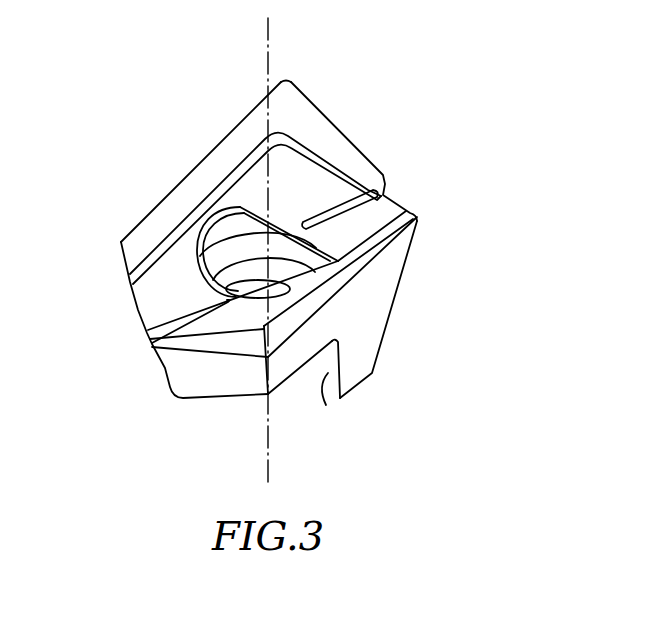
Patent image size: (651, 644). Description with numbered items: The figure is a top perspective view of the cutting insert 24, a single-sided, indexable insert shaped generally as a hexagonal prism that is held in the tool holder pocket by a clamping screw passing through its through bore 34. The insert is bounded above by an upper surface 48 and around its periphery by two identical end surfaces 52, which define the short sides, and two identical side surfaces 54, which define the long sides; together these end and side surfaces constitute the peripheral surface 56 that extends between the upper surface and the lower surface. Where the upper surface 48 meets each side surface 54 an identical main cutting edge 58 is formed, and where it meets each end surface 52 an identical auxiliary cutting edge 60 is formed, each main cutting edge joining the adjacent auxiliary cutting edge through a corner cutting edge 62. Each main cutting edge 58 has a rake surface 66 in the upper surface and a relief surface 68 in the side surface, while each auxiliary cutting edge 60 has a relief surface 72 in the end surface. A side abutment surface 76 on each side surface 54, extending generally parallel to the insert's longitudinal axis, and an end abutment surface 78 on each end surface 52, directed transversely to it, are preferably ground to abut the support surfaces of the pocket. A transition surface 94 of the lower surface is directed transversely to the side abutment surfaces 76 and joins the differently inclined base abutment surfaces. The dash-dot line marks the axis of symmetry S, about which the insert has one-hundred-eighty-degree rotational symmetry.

The cutting insert 24 is at (289, 247).
The through bore 34 is at (210, 266).
The upper surface 48 is at (168, 218).
The end surface 52 is at (375, 143).
The side surface 54 is at (356, 344).
The peripheral surface 56 is at (287, 368).
The main cutting edge 58 is at (235, 127).
The auxiliary cutting edge 60 is at (327, 108).
The corner cutting edge 62 is at (288, 80).
The rake surface 66 is at (200, 176).
The relief surface 68 is at (402, 238).
The relief surface 72 is at (207, 352).
The side abutment surface 76 is at (373, 302).
The end abutment surface 78 is at (243, 378).
The transition surface 94 is at (305, 361).
The axis of symmetry S is at (270, 29).